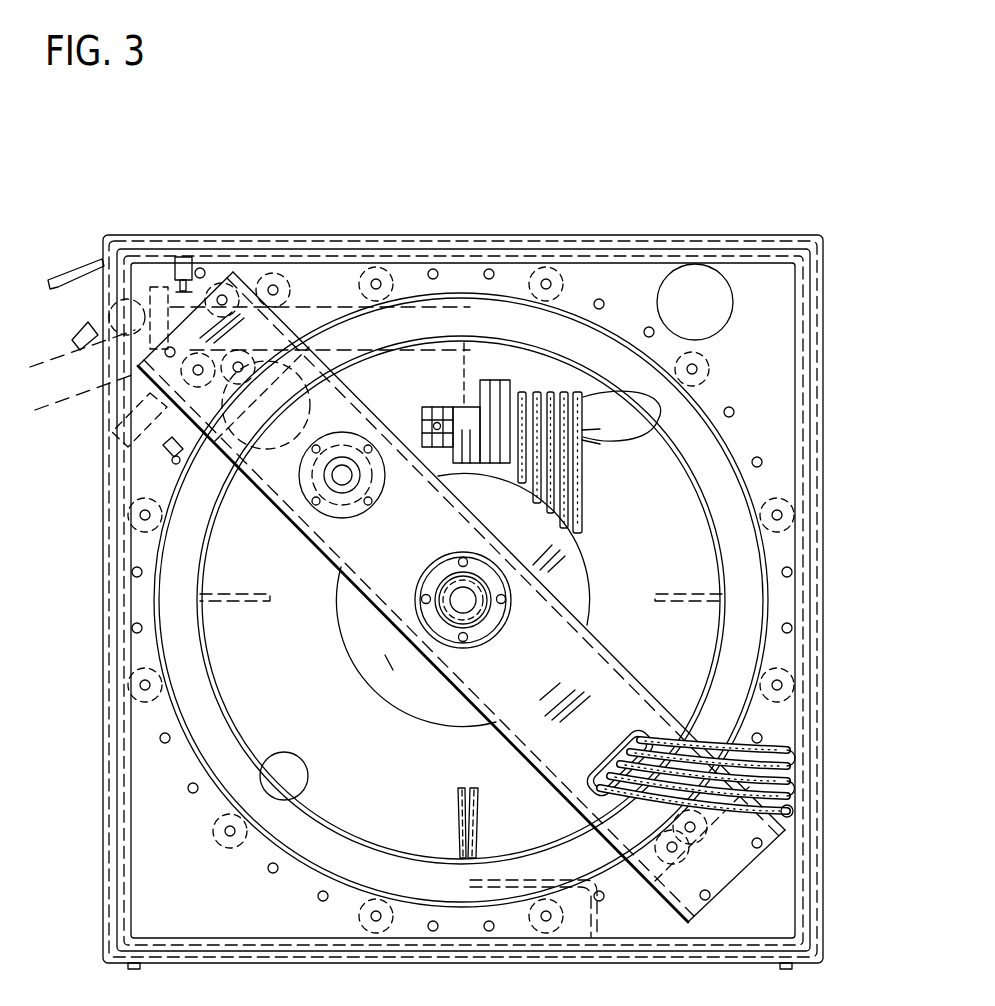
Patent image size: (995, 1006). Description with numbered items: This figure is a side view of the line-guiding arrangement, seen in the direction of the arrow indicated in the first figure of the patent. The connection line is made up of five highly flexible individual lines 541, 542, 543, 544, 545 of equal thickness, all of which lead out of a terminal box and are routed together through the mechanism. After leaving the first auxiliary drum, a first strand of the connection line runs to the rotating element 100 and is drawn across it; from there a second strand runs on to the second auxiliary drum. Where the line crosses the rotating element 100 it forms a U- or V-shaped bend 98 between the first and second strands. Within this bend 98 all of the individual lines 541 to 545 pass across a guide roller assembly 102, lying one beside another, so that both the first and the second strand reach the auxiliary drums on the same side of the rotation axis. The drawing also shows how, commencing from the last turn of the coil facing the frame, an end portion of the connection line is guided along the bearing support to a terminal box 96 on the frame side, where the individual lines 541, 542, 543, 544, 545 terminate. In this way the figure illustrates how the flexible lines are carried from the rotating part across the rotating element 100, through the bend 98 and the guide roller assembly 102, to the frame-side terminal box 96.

The individual line 541 is at (578, 392).
The individual line 542 is at (565, 392).
The individual line 543 is at (550, 392).
The individual line 544 is at (537, 392).
The individual line 545 is at (524, 392).
The terminal box on the frame side 96 is at (775, 742).
The U- or V-shaped bend 98 is at (600, 429).
The rotating element 100 is at (612, 403).
The guide roller assembly 102 is at (600, 444).